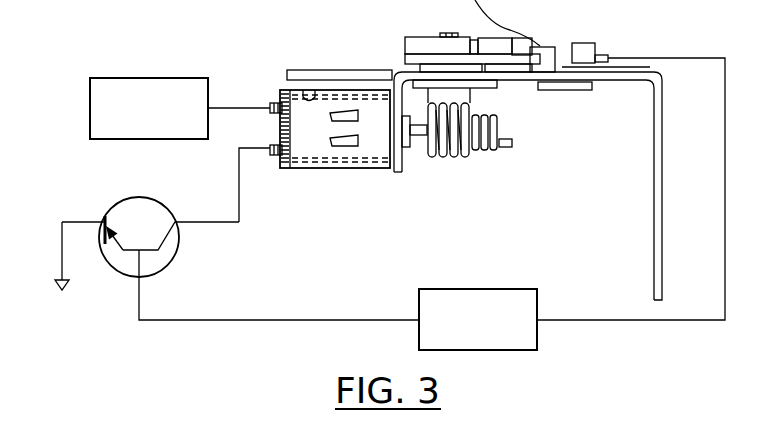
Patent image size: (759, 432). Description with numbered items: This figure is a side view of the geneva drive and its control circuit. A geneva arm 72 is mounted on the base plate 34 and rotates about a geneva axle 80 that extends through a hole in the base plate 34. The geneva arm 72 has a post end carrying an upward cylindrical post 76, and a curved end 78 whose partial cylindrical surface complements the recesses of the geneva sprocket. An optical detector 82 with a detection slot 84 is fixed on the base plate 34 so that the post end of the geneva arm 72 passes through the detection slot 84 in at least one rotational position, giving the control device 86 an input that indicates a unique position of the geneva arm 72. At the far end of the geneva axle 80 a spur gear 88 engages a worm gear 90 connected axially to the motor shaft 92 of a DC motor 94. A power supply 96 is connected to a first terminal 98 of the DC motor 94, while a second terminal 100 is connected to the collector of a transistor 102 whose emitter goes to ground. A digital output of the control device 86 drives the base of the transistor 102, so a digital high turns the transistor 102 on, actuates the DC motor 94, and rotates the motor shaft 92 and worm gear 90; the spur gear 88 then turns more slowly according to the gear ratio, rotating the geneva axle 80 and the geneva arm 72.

The base plate 34 is at (661, 70).
The geneva arm 72 is at (436, 47).
The cylindrical post 76 is at (508, 33).
The curved end 78 is at (405, 50).
The geneva axle 80 is at (462, 97).
The optical detector 82 is at (563, 45).
The detection slot 84 is at (543, 58).
The control device 86 is at (535, 338).
The spur gear 88 is at (500, 128).
The worm gear 90 is at (456, 154).
The motor shaft 92 is at (421, 150).
The DC motor 94 is at (328, 110).
The power supply 96 is at (97, 97).
The first terminal 98 is at (272, 108).
The second terminal 100 is at (268, 155).
The transistor 102 is at (112, 216).